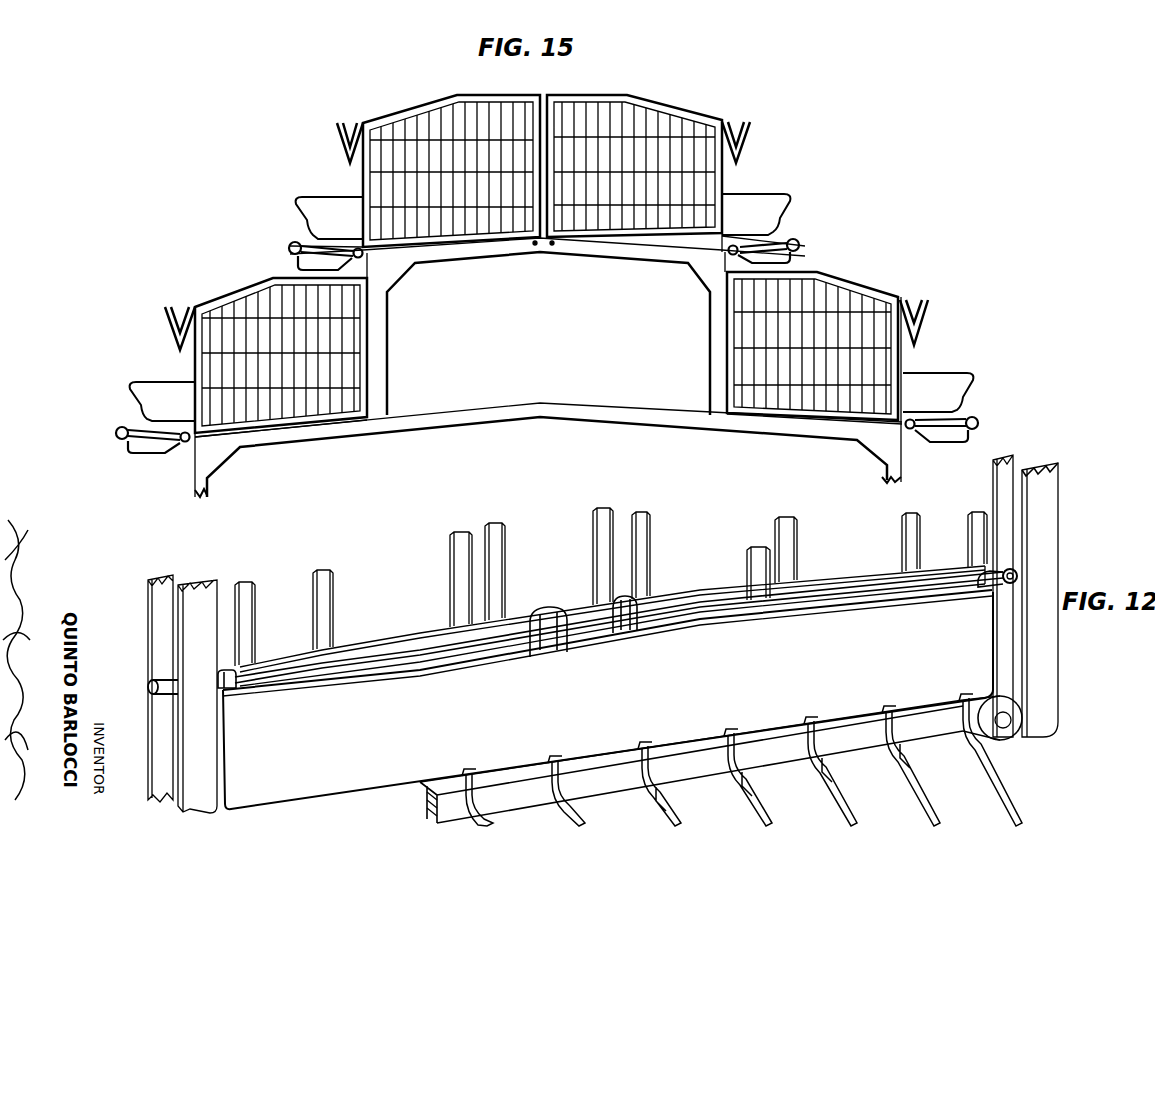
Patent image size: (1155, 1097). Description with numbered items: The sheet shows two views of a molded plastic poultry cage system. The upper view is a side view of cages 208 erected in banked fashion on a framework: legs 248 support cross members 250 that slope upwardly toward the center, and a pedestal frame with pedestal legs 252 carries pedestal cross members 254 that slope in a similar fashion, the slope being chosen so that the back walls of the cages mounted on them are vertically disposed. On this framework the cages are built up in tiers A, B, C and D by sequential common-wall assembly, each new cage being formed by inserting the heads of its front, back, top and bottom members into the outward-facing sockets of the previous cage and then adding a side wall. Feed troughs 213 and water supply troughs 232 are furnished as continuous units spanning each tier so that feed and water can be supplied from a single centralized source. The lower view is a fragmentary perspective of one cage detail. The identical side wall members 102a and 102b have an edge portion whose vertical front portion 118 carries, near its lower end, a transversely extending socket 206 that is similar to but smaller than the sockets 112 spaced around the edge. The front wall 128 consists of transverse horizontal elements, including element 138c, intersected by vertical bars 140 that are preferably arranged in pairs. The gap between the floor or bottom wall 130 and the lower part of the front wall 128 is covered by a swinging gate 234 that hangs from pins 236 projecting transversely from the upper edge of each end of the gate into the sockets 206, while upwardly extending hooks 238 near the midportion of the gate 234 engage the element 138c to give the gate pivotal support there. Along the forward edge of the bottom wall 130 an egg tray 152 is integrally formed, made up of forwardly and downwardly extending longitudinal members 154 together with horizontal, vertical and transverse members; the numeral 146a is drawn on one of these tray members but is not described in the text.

In FIG. 15, the cage 208 is at (627, 92).
In FIG. 15, the water supply trough 232 is at (752, 128).
In FIG. 15, the feed trough 213 is at (784, 208).
In FIG. 15, the pedestal cross member 254 is at (572, 260).
In FIG. 15, the pedestal leg 252 is at (386, 370).
In FIG. 15, the cross member 250 is at (462, 425).
In FIG. 15, the leg 248 is at (205, 484).
In FIG. 15, the egg tray 152 is at (980, 436).
In FIG. 15, the tier A is at (836, 346).
In FIG. 15, the tier B is at (651, 172).
In FIG. 15, the tier C is at (429, 172).
In FIG. 15, the tier D is at (252, 355).
In FIG. 12, the wall member 102a is at (140, 636).
In FIG. 12, the wall member 102b is at (1058, 494).
In FIG. 12, the socket 206 is at (160, 684).
In FIG. 12, the front portion 118 is at (1044, 673).
In FIG. 12, the swinging gate 234 is at (730, 706).
In FIG. 12, the pin 236 is at (240, 690).
In FIG. 12, the hook 238 is at (557, 650).
In FIG. 12, the vertical bar 140 is at (455, 600).
In FIG. 12, the front wall 128 is at (569, 538).
In FIG. 12, the transverse horizontal element 138c is at (740, 595).
In FIG. 12, the bottom wall 130 is at (1020, 778).
In FIG. 12, the socket 112 is at (1010, 722).
In FIG. 12, the longitudinal member 154 is at (1008, 802).
In FIG. 12, the tine 146a is at (695, 780).